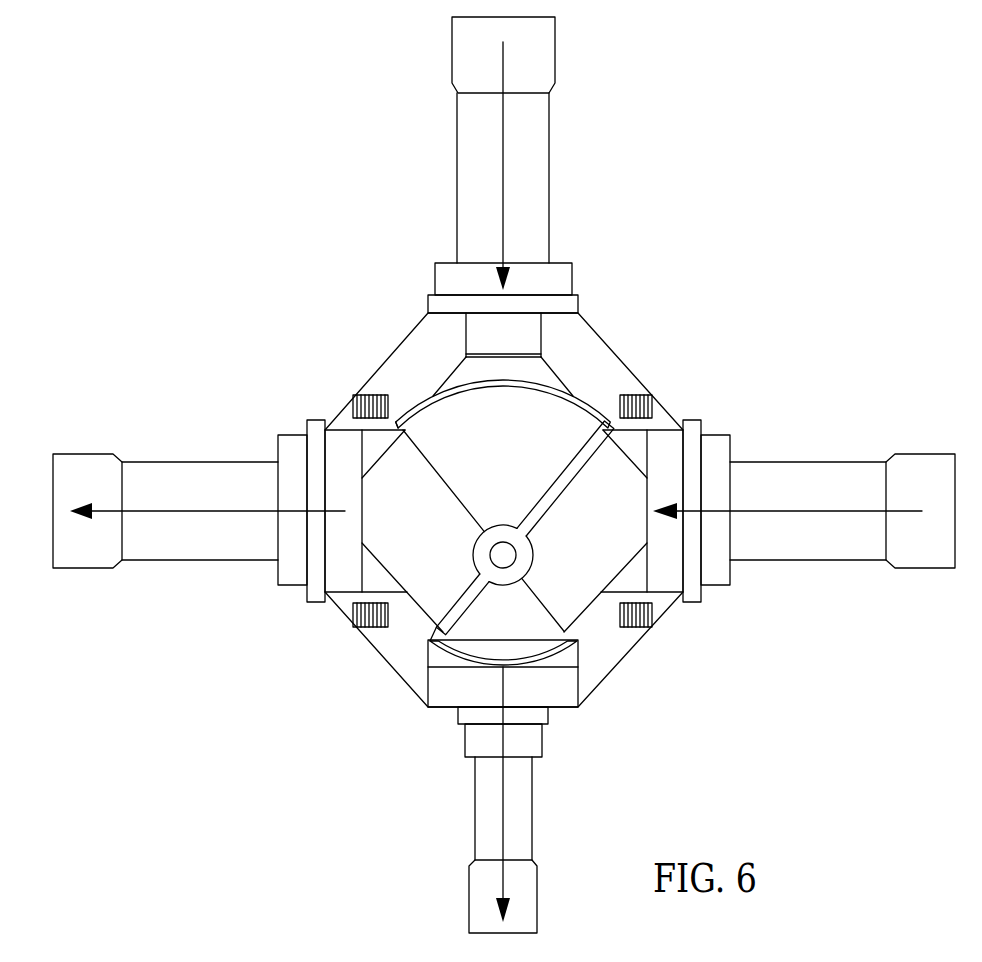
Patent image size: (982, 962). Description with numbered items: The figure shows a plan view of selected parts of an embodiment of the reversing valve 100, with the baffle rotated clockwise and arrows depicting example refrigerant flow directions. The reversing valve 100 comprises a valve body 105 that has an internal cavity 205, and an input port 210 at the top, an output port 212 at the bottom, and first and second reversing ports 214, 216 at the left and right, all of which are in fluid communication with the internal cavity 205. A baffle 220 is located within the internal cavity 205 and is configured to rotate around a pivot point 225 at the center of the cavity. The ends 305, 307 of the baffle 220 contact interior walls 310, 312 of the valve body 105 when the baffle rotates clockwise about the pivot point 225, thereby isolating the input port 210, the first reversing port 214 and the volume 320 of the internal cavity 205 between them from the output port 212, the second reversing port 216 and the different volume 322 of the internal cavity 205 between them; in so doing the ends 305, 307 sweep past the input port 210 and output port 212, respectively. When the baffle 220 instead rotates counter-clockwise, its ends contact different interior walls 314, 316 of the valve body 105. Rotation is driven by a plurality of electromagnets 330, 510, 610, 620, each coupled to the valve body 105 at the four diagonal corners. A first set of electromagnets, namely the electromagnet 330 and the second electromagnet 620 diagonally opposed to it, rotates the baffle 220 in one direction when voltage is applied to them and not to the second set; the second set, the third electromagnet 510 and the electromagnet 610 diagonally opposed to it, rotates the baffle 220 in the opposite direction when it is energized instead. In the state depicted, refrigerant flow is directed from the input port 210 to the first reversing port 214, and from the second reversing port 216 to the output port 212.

The reversing valve 100 is at (254, 233).
The valve body 105 is at (593, 681).
The internal cavity 205 is at (493, 493).
The input port 210 is at (430, 305).
The output port 212 is at (543, 717).
The first reversing port 214 is at (314, 592).
The second reversing port 216 is at (690, 593).
The baffle 220 is at (532, 513).
The pivot point 225 is at (500, 556).
The end of the baffle 305 is at (599, 412).
The end of the baffle 307 is at (440, 638).
The interior wall 310 is at (570, 407).
The interior wall 312 is at (463, 633).
The interior wall 314 is at (406, 427).
The interior wall 316 is at (550, 635).
The volume of the internal cavity 320 is at (418, 493).
The different volume of the internal cavity 322 is at (625, 493).
The first electromagnet 330 is at (353, 405).
The third electromagnet 510 is at (654, 405).
The electromagnet 610 is at (353, 617).
The second electromagnet 620 is at (654, 617).